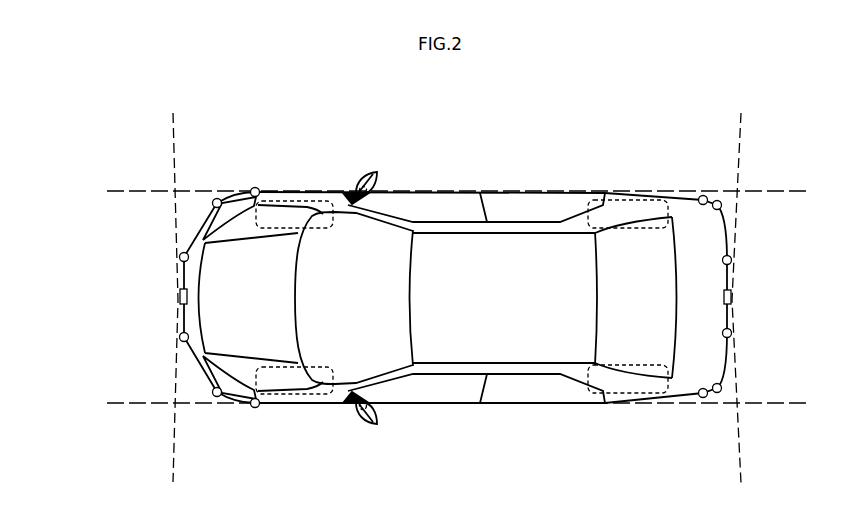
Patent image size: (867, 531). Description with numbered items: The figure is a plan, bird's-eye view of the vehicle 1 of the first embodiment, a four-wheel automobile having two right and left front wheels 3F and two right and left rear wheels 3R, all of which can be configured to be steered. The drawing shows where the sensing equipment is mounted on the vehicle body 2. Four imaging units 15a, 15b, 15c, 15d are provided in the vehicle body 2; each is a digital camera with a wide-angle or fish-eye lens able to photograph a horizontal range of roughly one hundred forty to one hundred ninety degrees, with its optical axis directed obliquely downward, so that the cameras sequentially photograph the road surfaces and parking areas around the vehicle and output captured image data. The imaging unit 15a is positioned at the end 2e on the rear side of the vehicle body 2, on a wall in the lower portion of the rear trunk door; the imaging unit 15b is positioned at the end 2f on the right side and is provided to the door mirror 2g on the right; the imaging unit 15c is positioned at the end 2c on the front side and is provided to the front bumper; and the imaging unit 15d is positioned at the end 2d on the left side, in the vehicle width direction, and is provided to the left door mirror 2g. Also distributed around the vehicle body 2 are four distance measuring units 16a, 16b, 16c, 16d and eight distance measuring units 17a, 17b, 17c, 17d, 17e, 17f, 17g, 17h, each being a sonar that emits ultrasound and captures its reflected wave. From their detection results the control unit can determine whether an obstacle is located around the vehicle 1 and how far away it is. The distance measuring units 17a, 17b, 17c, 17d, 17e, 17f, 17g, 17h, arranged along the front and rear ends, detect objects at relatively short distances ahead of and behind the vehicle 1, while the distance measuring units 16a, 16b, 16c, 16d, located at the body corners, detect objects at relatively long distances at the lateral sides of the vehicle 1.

The vehicle 1 is at (550, 125).
The vehicle body 2 is at (684, 194).
The end on the front side of the vehicle body 2c is at (178, 310).
The end on the left side of the vehicle body 2d is at (544, 403).
The end on the rear side of the vehicle body 2e is at (732, 313).
The end on the right side of the vehicle body 2f is at (548, 192).
The door mirror 2g is at (380, 173).
The front wheels 3F is at (293, 201).
The rear wheels 3R is at (622, 199).
The imaging unit 15a is at (733, 296).
The imaging unit 15b is at (363, 186).
The imaging unit 15c is at (179, 295).
The imaging unit 15d is at (362, 410).
The distance measuring unit 16a is at (704, 398).
The distance measuring unit 16b is at (704, 196).
The distance measuring unit 16c is at (252, 188).
The distance measuring unit 16d is at (252, 406).
The distance measuring unit 17a is at (722, 388).
The distance measuring unit 17b is at (732, 334).
The distance measuring unit 17c is at (732, 260).
The distance measuring unit 17d is at (721, 203).
The distance measuring unit 17e is at (213, 204).
The distance measuring unit 17f is at (180, 257).
The distance measuring unit 17g is at (180, 337).
The distance measuring unit 17h is at (212, 392).